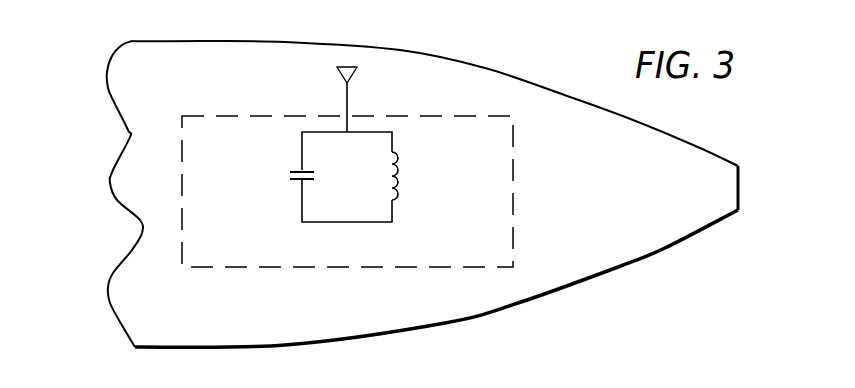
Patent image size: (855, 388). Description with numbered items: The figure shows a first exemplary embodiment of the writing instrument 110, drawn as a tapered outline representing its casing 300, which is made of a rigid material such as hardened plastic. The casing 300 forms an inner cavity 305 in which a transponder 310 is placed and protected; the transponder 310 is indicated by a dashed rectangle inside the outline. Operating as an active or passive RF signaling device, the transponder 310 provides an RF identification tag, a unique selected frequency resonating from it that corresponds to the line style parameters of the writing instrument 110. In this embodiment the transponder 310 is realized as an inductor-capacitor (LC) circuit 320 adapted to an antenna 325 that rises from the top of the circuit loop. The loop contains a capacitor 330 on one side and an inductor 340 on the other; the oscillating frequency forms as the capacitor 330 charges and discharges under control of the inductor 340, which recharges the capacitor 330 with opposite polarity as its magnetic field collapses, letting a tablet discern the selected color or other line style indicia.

The writing instrument 110 is at (96, 98).
The casing 300 is at (483, 65).
The inner cavity 305 is at (641, 200).
The transponder 310 is at (366, 264).
The inductor-capacitor (LC) circuit 320 is at (405, 133).
The antenna 325 is at (316, 107).
The capacitor 330 is at (282, 178).
The inductor 340 is at (404, 210).